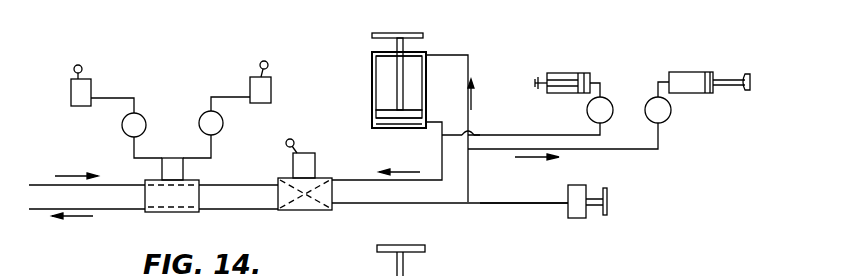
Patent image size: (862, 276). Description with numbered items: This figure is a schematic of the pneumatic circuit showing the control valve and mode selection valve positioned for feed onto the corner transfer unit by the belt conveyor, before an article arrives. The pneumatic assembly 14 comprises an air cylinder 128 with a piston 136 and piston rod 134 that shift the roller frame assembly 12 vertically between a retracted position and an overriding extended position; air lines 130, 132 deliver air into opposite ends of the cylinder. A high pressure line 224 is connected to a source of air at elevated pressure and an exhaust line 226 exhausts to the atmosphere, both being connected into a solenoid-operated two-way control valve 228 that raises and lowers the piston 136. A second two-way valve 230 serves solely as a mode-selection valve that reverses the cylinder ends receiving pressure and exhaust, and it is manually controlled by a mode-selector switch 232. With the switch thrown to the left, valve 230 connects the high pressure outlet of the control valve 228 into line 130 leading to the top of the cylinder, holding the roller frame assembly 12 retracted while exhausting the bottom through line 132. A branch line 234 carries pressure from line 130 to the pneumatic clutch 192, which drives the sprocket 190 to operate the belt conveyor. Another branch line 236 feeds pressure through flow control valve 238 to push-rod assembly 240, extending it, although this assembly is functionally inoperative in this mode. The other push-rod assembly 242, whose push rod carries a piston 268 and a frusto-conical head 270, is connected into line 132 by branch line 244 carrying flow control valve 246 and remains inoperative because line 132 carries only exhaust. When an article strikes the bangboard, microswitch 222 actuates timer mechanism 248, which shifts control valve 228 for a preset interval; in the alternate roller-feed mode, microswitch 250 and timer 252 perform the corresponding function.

The roller frame assembly 12 is at (409, 33).
The pneumatic assembly 14 is at (370, 69).
The air cylinder 128 is at (427, 56).
The air line 130 is at (470, 63).
The air line 132 is at (397, 181).
The piston rod 134 is at (397, 43).
The piston 136 is at (376, 120).
The sprocket 190 is at (608, 211).
The pneumatic clutch 192 is at (572, 219).
The microswitch 222 is at (271, 96).
The high pressure line 224 is at (41, 185).
The exhaust line 226 is at (110, 210).
The control valve 228 is at (158, 213).
The mode-selection valve 230 is at (299, 211).
The mode-selector switch 232 is at (313, 164).
The branch line 234 is at (507, 204).
The branch line 236 is at (622, 150).
The flow control valve 238 is at (671, 114).
The push-rod assembly 240 is at (688, 72).
The push-rod assembly 242 is at (556, 74).
The branch line 244 is at (562, 135).
The flow control valve 246 is at (608, 99).
The timer mechanism 248 is at (223, 122).
The microswitch 250 is at (71, 95).
The timer 252 is at (122, 126).
The piston 268 is at (586, 76).
The frusto-conical head 270 is at (535, 84).